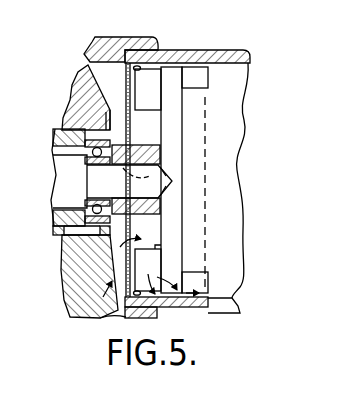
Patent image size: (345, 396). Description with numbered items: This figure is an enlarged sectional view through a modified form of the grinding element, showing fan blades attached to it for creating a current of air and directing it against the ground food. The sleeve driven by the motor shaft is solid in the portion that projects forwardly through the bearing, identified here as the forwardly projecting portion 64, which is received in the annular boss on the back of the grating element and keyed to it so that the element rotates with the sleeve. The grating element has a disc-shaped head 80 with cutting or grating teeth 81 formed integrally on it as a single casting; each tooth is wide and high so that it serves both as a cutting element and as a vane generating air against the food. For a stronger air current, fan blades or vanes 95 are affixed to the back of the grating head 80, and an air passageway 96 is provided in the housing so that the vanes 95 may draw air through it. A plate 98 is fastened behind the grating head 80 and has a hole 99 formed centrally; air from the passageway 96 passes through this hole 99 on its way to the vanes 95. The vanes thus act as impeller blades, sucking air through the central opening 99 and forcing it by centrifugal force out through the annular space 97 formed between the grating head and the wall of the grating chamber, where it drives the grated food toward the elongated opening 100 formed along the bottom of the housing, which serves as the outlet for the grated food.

The forwardly projecting sleeve portion 64 is at (118, 189).
The disc-shaped head 80 is at (172, 78).
The grating teeth 81 is at (199, 78).
The fan blades 95 is at (149, 87).
The air passageway 96 is at (115, 300).
The annular space 97 is at (190, 298).
The plate 98 is at (127, 82).
The hole 99 is at (125, 123).
The elongated opening 100 is at (228, 309).